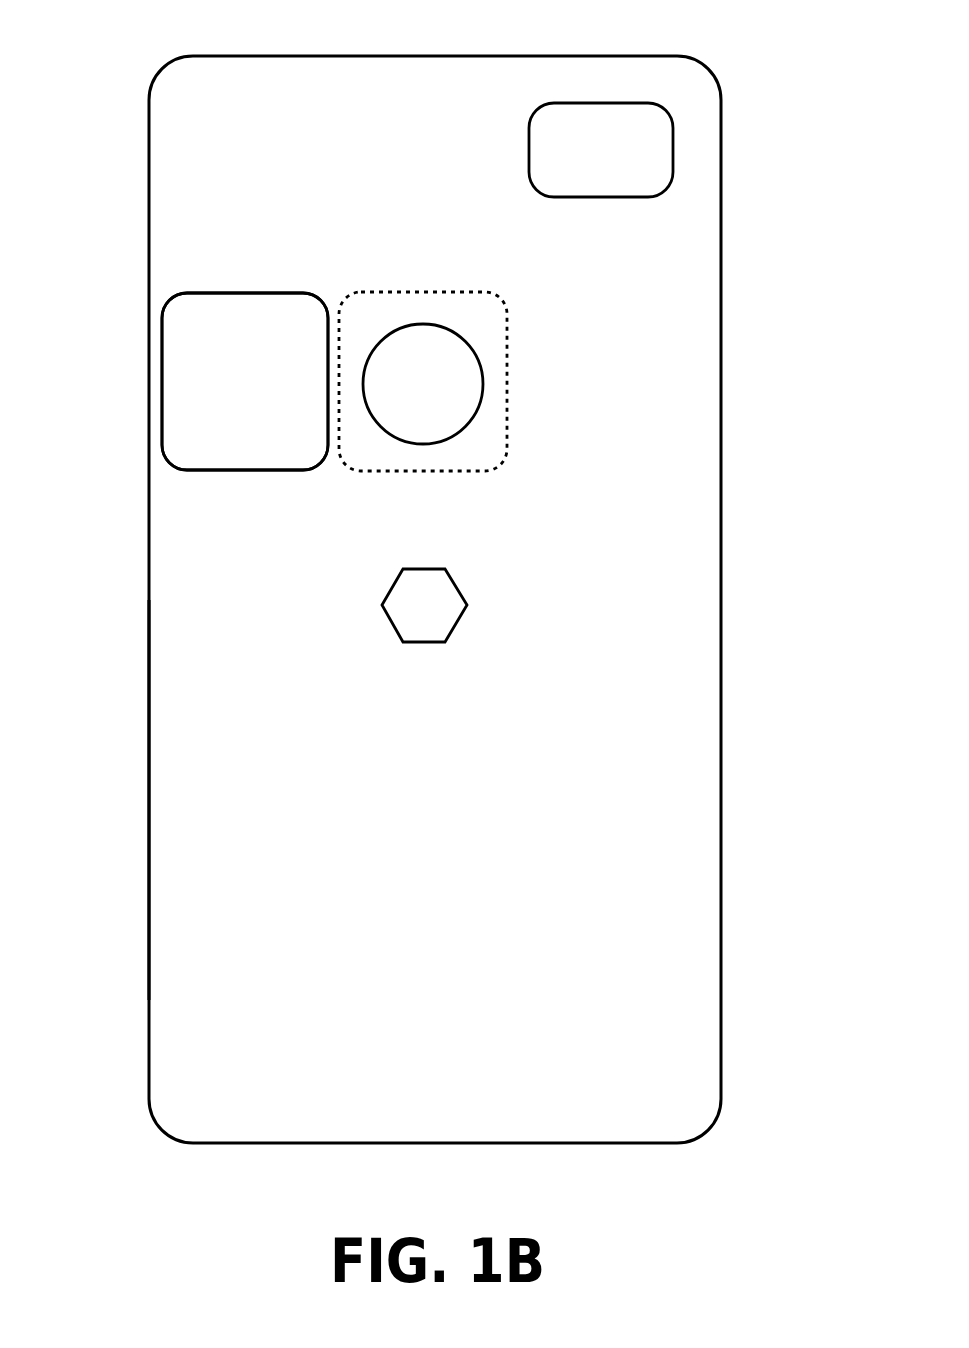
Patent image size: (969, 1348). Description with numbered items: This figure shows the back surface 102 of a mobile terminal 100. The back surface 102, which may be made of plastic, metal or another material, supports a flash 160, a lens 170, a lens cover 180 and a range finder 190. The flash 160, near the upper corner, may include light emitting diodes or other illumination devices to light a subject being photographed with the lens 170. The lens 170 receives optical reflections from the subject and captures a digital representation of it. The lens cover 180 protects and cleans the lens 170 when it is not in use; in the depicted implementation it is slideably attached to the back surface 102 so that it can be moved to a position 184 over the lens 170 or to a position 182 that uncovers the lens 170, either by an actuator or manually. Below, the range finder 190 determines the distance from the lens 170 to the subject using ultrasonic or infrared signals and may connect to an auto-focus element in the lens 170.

The terminal 100 is at (435, 574).
The back surface 102 is at (123, 796).
The flash 160 is at (670, 131).
The lens 170 is at (471, 384).
The lens cover 180 is at (180, 391).
The position 182 is at (245, 349).
The position 184 is at (427, 350).
The range finder 190 is at (472, 587).